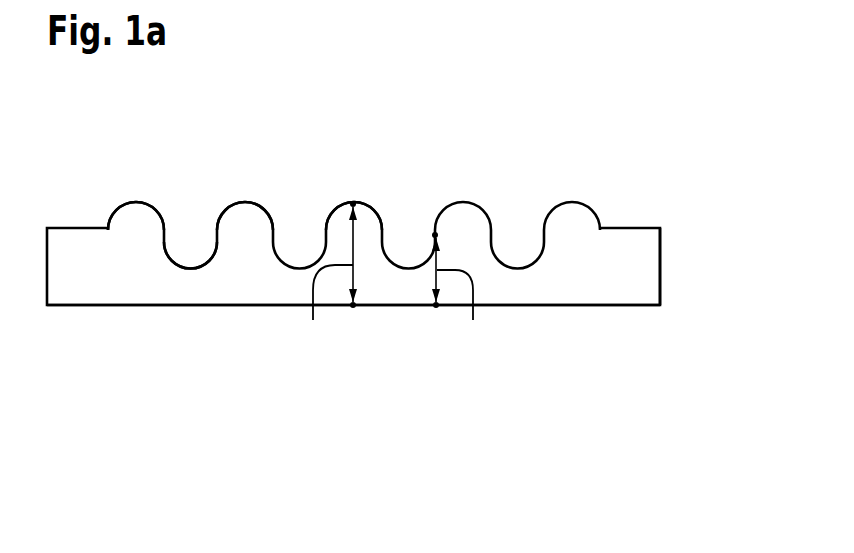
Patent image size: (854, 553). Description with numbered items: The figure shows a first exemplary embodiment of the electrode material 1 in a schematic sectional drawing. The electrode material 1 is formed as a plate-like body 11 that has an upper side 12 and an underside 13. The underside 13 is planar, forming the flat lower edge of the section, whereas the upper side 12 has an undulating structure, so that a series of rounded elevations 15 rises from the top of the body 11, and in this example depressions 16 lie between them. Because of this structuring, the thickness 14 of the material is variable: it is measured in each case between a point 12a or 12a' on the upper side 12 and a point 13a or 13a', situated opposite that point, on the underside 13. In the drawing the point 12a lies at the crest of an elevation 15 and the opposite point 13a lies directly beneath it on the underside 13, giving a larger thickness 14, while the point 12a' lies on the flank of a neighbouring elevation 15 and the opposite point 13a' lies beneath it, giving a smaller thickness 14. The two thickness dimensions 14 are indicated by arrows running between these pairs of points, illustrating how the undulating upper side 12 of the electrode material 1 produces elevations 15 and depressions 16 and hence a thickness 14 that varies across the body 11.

The electrode material 1 is at (603, 145).
The plate-like body 11 is at (645, 267).
The upper side 12 is at (133, 205).
The point on the upper side 12a is at (354, 175).
The point on the upper side 12a' is at (437, 179).
The underside 13 is at (133, 305).
The point on the underside 13a is at (354, 345).
The point on the underside 13a' is at (438, 345).
The thickness 14 is at (313, 320).
The elevation 15 is at (244, 205).
The depression 16 is at (190, 268).